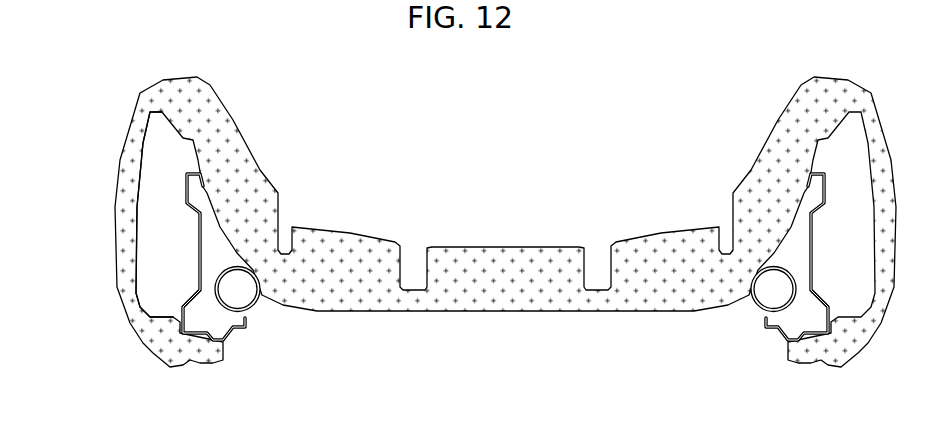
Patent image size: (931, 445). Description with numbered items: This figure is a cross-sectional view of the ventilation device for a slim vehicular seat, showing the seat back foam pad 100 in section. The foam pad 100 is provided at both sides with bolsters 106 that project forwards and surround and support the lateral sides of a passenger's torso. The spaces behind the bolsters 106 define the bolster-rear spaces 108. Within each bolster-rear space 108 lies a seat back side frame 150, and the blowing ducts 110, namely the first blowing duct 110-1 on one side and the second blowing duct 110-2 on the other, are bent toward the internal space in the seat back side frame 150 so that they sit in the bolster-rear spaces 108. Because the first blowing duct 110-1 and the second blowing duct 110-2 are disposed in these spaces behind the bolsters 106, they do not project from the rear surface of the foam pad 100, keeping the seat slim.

The foam pad 100 is at (461, 242).
The bolster 106 is at (207, 107).
The bolster-rear space 108 is at (167, 240).
The seat back side frame 150 is at (200, 268).
The blowing duct 110 is at (507, 345).
The first blowing duct 110-1 is at (250, 307).
The second blowing duct 110-2 is at (757, 306).